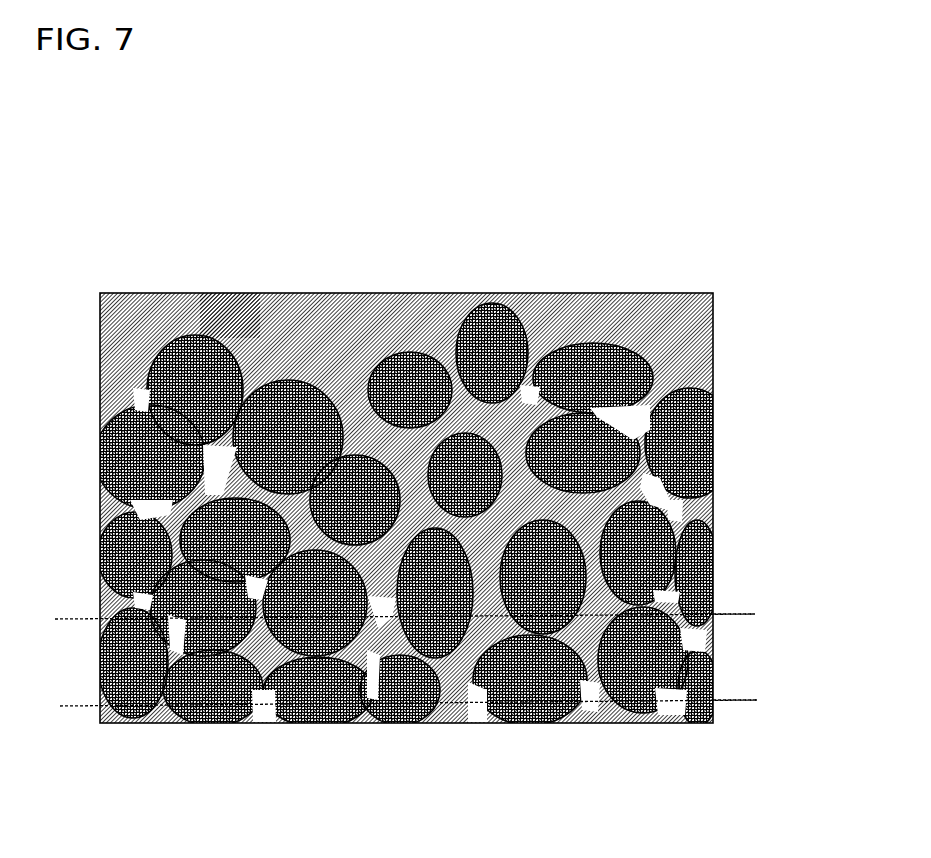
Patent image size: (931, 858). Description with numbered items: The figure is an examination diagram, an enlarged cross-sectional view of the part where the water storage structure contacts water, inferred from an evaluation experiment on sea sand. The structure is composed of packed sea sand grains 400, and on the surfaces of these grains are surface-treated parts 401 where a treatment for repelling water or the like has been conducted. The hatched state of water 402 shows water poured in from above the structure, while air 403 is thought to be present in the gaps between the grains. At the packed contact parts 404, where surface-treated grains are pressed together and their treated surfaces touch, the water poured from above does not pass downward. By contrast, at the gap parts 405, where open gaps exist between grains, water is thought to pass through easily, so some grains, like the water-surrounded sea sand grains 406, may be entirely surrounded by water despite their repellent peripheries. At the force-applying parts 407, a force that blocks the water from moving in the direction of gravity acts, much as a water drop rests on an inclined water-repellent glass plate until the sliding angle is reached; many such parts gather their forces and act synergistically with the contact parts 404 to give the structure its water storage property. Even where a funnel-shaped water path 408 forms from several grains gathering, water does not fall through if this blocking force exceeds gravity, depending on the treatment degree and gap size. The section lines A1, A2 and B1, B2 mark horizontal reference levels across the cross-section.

The sea sand grains 400 is at (100, 490).
The surface-treated parts 401 is at (713, 568).
The state of water 402 is at (713, 467).
The air 403 is at (100, 590).
The packed contact parts 404 is at (448, 293).
The gap parts 405 is at (550, 723).
The water-surrounded sea sand grains 406 is at (507, 293).
The force-applying parts 407 is at (250, 293).
The funnel-shaped water path 408 is at (387, 723).
The section line A1 is at (388, 619).
The section line A2 is at (756, 616).
The section line B1 is at (389, 703).
The section line B2 is at (758, 697).